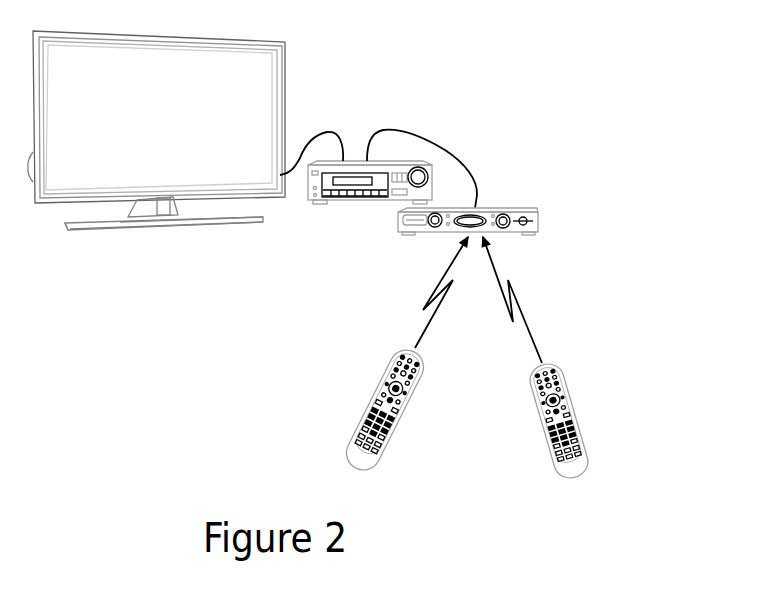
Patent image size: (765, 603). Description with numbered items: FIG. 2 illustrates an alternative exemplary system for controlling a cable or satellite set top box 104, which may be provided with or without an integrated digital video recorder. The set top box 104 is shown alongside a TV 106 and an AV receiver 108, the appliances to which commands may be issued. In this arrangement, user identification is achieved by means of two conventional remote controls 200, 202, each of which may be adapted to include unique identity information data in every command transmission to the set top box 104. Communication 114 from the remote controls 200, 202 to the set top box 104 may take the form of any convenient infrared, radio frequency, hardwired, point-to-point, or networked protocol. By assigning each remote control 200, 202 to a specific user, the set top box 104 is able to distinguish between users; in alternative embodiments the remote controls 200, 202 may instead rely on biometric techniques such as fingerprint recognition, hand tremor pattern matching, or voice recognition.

The set top box 104 is at (502, 207).
The TV 106 is at (247, 38).
The AV receiver 108 is at (377, 208).
The communication 114 is at (503, 293).
The remote control 200 is at (380, 462).
The remote control 202 is at (587, 450).